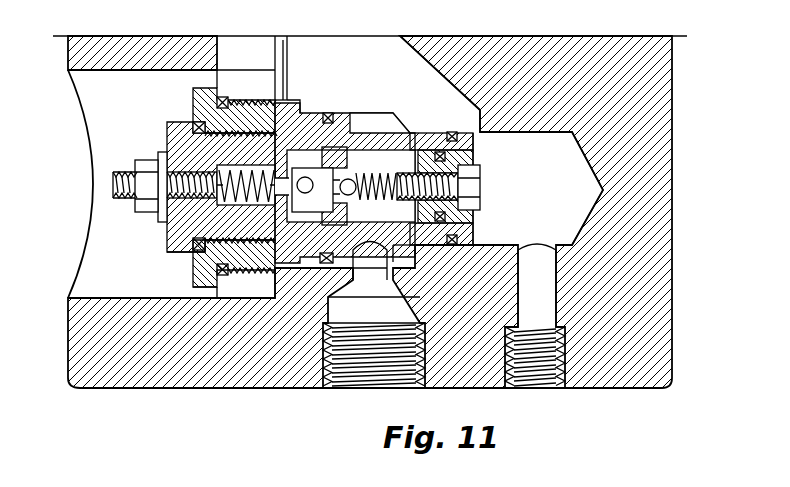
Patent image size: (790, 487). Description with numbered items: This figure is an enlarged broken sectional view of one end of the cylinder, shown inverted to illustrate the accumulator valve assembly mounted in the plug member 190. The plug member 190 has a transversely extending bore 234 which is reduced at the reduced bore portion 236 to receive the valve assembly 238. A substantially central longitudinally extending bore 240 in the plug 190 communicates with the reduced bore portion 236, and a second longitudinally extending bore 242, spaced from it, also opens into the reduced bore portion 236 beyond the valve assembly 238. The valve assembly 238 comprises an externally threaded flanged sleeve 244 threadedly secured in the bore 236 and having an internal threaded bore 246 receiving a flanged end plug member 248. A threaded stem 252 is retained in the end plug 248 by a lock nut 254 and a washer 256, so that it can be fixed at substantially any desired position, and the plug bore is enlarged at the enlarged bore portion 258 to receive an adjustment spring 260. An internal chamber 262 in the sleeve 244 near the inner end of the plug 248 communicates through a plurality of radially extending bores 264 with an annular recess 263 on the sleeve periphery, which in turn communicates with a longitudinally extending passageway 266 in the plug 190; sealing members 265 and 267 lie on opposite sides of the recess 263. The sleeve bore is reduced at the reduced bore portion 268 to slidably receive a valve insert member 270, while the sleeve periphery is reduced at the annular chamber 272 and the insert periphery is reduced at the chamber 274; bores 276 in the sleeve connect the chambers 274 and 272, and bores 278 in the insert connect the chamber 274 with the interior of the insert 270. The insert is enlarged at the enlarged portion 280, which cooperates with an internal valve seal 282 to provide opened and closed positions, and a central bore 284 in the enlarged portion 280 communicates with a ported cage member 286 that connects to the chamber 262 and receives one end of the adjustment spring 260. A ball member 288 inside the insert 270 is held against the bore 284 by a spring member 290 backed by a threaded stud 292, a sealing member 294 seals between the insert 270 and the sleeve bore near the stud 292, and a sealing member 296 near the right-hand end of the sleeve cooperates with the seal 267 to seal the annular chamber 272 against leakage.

The plug member 190 is at (648, 176).
The transversely extending bore 234 is at (90, 297).
The reduced bore portion 236 is at (271, 268).
The valve assembly 238 is at (422, 133).
The longitudinally extending bore 240 is at (342, 368).
The second longitudinally extending bore 242 is at (543, 363).
The externally threaded flanged sleeve 244 is at (200, 290).
The internal threaded bore 246 is at (197, 233).
The flanged end plug member 248 is at (180, 133).
The threaded stem 252 is at (112, 180).
The lock nut 254 is at (150, 163).
The cap 256 is at (157, 157).
The enlarged bore portion 258 is at (246, 130).
The adjustment spring 260 is at (288, 110).
The internal chamber 262 is at (330, 258).
The annular recess 263 is at (283, 100).
The radially extending bores 264 is at (297, 115).
The sealing member 265 is at (223, 97).
The longitudinally extending passageway 266 is at (284, 63).
The sealing member 267 is at (347, 113).
The reduced internal bore portion 268 is at (398, 132).
The valve insert member 270 is at (507, 132).
The reduced outer periphery (annular chamber) 272 is at (360, 133).
The reduced outer periphery (chamber) 274 is at (385, 206).
The circumferentially spaced bores 276 is at (380, 228).
The circumferentially spaced bores 278 is at (337, 257).
The enlarged portion 280 is at (332, 223).
The internal valve seal 282 is at (333, 141).
The central bore 284 is at (268, 270).
The ported cage member 286 is at (230, 200).
The ball member 288 is at (443, 133).
The spring member 290 is at (412, 238).
The threaded stud 292 is at (473, 160).
The sealing member 294 is at (470, 217).
The sealing member 296 is at (472, 240).